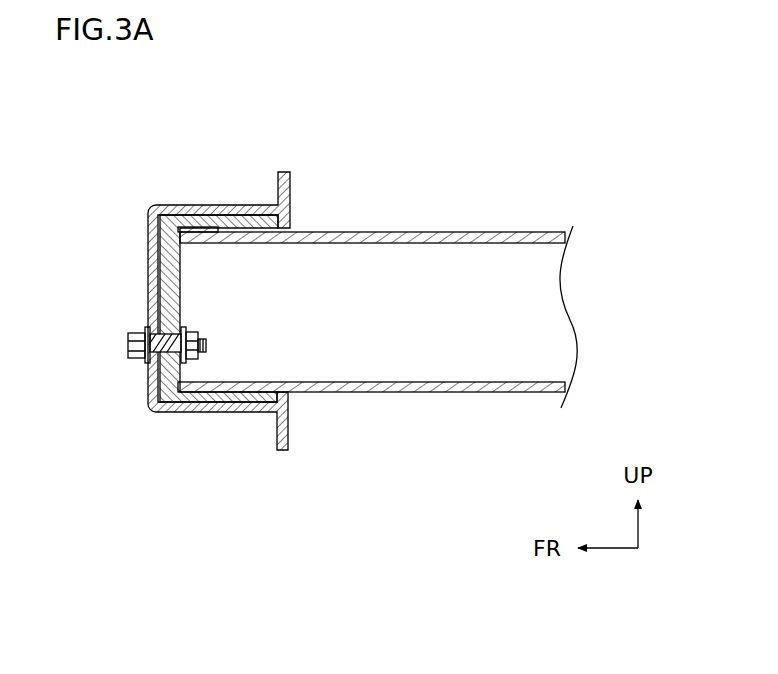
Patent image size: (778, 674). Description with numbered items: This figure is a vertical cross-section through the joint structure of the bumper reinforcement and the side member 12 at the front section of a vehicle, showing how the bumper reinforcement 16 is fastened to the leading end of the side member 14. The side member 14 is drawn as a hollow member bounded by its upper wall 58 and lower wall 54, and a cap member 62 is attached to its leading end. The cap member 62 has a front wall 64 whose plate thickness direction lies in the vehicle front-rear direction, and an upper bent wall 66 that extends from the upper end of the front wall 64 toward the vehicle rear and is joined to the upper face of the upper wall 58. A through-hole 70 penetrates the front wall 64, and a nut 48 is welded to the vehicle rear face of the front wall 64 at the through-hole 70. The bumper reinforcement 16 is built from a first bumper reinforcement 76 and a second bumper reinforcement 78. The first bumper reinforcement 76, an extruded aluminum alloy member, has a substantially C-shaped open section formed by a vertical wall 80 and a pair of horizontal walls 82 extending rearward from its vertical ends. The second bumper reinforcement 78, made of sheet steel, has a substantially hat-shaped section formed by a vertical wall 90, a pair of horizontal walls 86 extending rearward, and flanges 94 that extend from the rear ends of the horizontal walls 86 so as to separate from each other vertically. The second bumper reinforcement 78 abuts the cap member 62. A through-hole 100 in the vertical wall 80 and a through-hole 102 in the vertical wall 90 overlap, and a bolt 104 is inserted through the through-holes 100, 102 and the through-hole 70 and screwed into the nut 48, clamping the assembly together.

The joint structure of the bumper reinforcement and the side member 12 is at (306, 118).
The side member 14 is at (377, 297).
The bumper reinforcement 16 is at (222, 295).
The nut 48 is at (197, 332).
The lower wall 54 is at (443, 393).
The upper wall 58 is at (405, 232).
The cap member 62 is at (184, 277).
The front wall 64 is at (182, 303).
The upper bent wall 66 is at (200, 205).
The through-hole 70 is at (203, 345).
The first bumper reinforcement 76 is at (148, 415).
The second bumper reinforcement 78 is at (278, 188).
The vertical wall 80 is at (148, 243).
The horizontal wall 82 is at (170, 205).
The horizontal wall 86 is at (250, 205).
The vertical wall 90 is at (148, 270).
The flange 94 is at (290, 193).
The through-hole 100 is at (162, 360).
The through-hole 102 is at (147, 372).
The bolt 104 is at (145, 327).